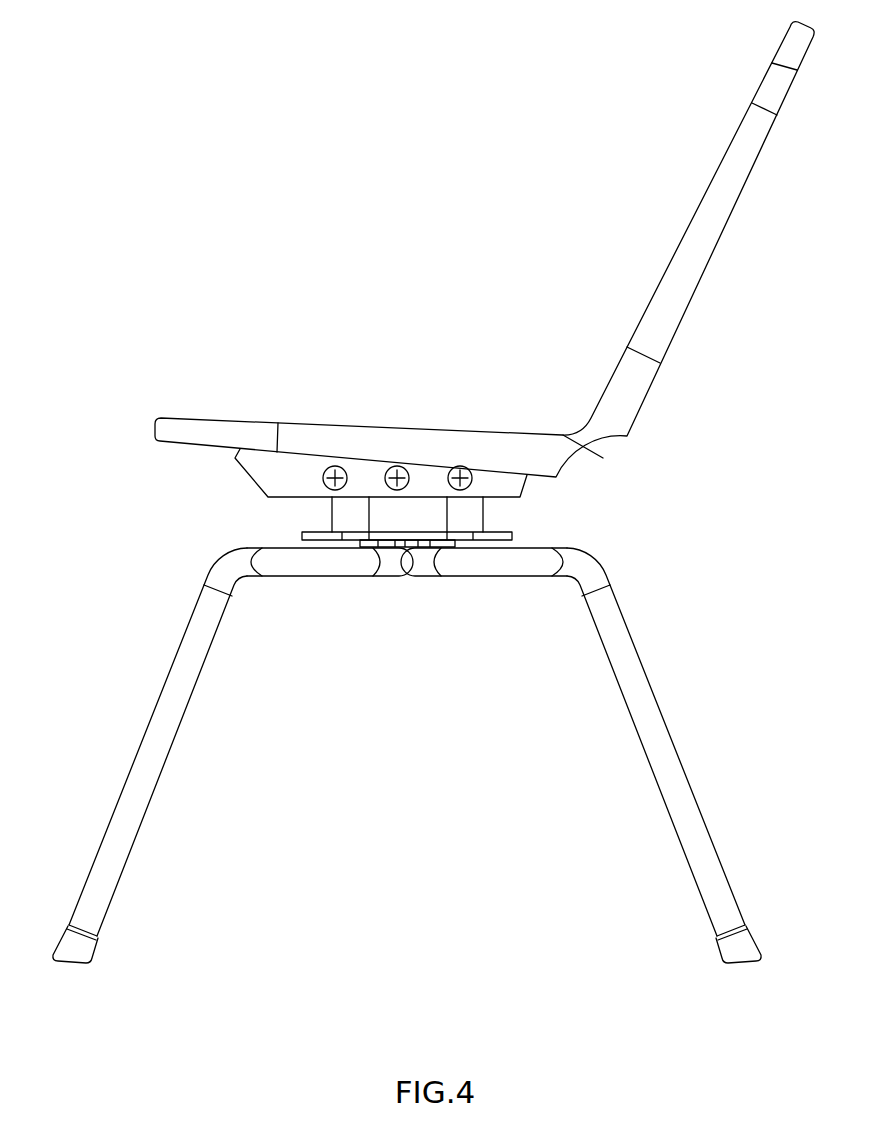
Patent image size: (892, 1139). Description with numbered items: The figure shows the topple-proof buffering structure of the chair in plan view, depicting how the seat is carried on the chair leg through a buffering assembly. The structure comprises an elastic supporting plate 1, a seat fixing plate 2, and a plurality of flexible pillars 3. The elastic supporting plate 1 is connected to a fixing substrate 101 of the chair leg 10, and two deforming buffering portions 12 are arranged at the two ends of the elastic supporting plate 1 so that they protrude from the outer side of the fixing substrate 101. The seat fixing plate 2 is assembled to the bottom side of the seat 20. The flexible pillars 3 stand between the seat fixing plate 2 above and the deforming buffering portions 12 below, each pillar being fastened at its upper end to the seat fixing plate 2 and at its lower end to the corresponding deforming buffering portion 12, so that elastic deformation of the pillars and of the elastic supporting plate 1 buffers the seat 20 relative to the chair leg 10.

The seat 20 is at (342, 433).
The seat fixing plate 2 is at (265, 477).
The flexible pillars 3 is at (345, 518).
The elastic supporting plate 1 is at (405, 533).
The fixing substrate 101 is at (435, 542).
The deforming buffering portions 12 is at (313, 537).
The chair leg 10 is at (640, 695).